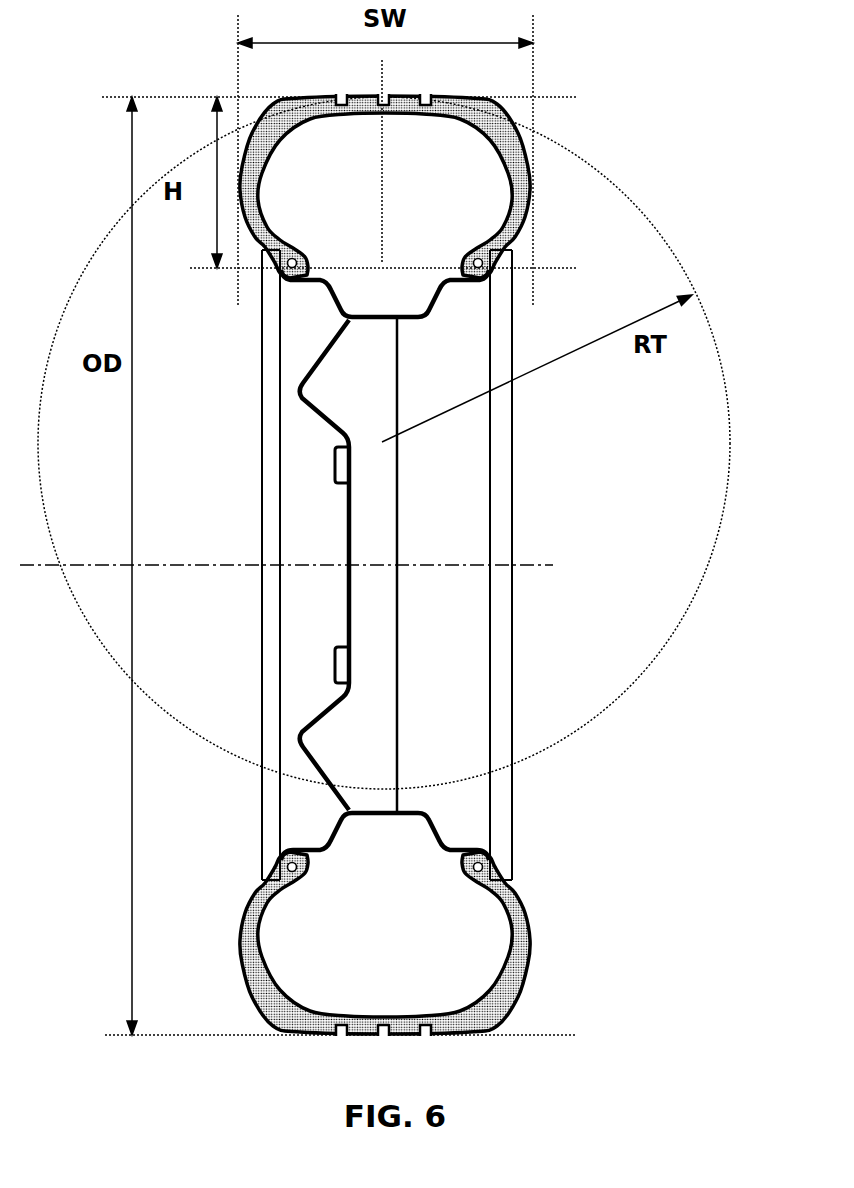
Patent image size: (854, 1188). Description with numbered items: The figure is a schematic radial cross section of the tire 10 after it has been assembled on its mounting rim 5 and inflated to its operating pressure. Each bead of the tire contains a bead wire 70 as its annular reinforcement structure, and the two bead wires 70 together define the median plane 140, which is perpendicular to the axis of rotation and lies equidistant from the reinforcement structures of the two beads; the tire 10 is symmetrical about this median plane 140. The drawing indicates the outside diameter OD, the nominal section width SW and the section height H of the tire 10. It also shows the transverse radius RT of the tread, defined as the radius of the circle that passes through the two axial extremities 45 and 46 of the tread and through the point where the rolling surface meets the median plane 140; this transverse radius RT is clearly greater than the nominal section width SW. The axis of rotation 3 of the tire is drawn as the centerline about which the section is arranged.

The axis of rotation 3 is at (324, 567).
The mounting rim 5 is at (544, 470).
The tire 10 is at (567, 232).
The axial edge of the tread 45 is at (276, 101).
The axial extremity of the tread 46 is at (499, 101).
The bead wire 70 is at (297, 260).
The median plane 140 is at (382, 165).